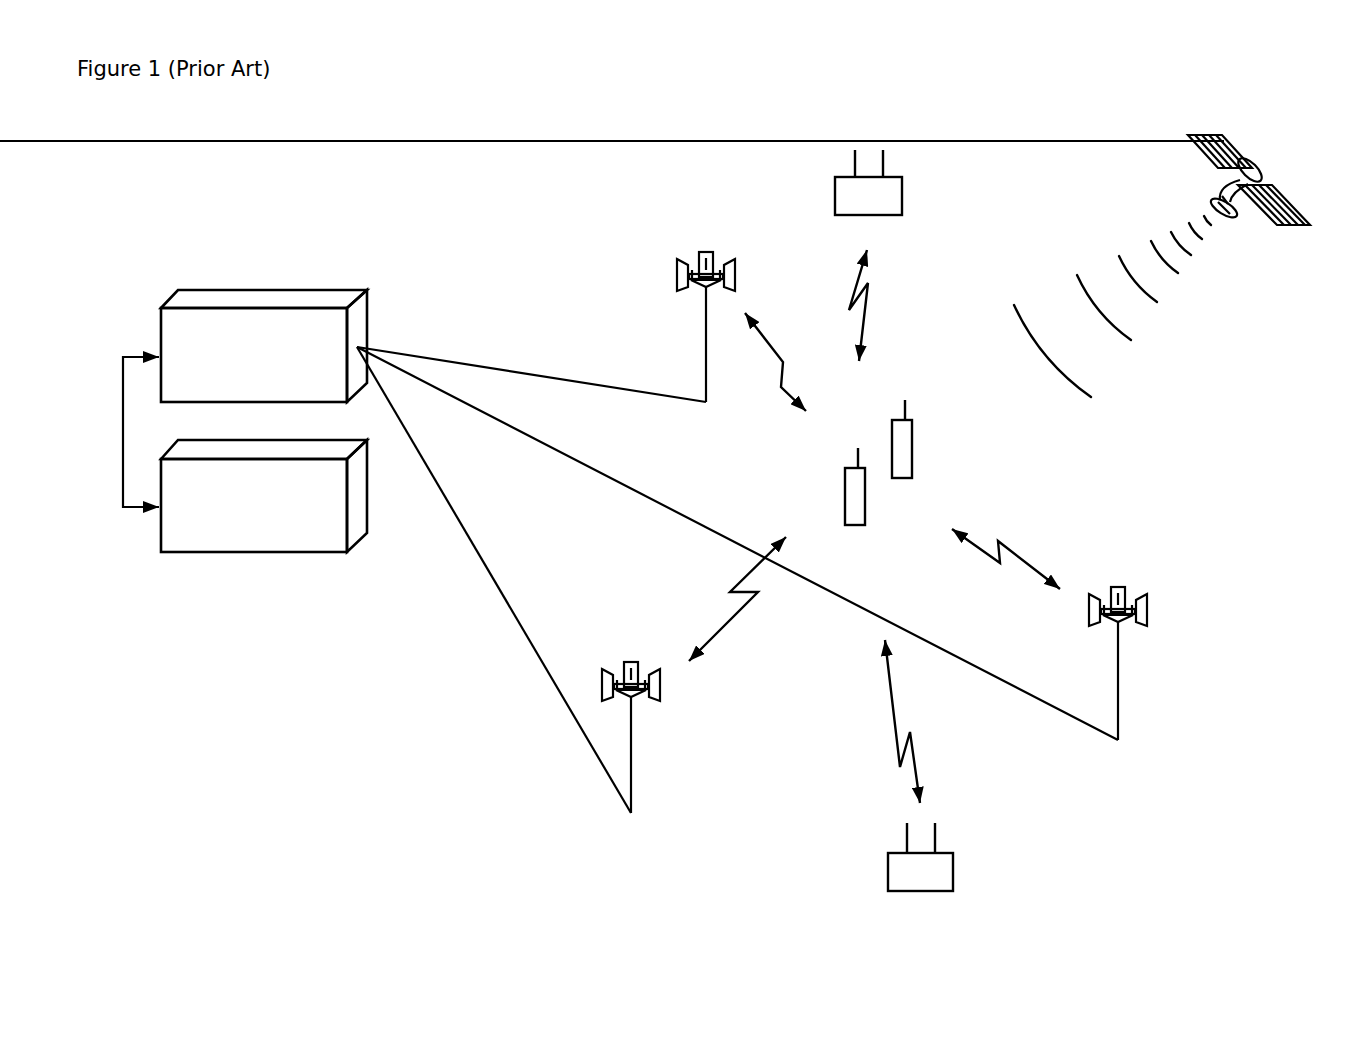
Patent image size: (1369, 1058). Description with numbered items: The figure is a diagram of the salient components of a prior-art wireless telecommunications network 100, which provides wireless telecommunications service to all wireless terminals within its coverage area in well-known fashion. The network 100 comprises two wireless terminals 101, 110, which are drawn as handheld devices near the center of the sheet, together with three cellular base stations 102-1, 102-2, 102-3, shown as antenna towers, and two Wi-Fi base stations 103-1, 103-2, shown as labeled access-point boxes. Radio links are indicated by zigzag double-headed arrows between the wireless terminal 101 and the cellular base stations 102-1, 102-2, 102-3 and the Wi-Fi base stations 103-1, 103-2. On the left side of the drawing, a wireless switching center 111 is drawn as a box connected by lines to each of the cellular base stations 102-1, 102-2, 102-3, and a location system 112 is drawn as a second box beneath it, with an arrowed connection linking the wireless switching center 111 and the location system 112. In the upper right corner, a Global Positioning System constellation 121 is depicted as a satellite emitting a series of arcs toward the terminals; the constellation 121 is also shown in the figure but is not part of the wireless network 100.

The wireless telecommunications network 100 is at (122, 116).
The wireless terminal 101 is at (815, 486).
The cellular base station 102-1 is at (670, 327).
The cellular base station 102-2 is at (667, 737).
The cellular base station 102-3 is at (1154, 663).
The Wi-Fi base station 103-1 is at (918, 182).
The Wi-Fi base station 103-2 is at (971, 857).
The wireless terminal 110 is at (942, 438).
The wireless switching center 111 is at (264, 331).
The location system 112 is at (264, 481).
The Global Positioning System (GPS) constellation 121 is at (655, 255).